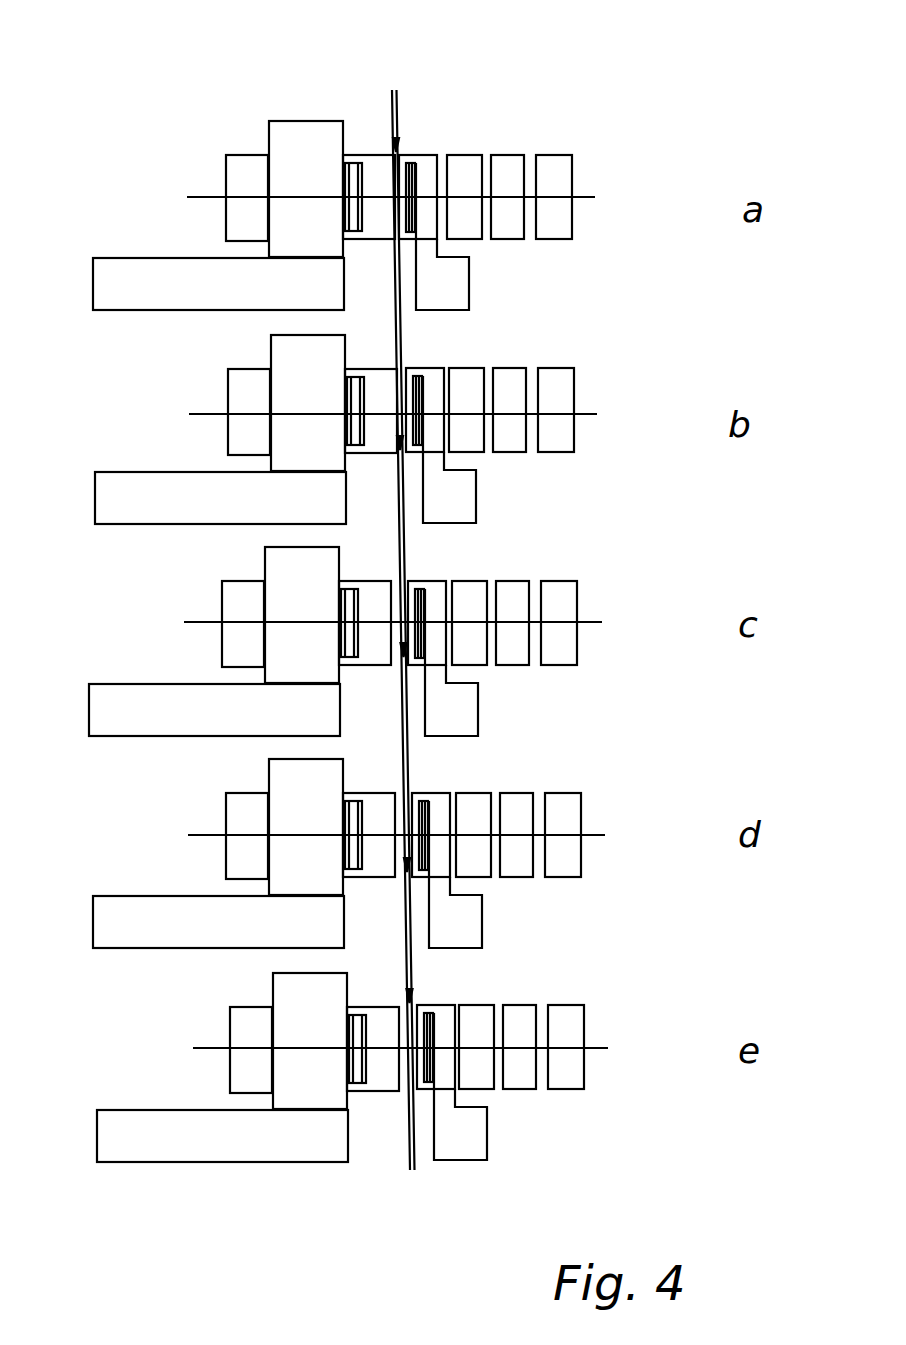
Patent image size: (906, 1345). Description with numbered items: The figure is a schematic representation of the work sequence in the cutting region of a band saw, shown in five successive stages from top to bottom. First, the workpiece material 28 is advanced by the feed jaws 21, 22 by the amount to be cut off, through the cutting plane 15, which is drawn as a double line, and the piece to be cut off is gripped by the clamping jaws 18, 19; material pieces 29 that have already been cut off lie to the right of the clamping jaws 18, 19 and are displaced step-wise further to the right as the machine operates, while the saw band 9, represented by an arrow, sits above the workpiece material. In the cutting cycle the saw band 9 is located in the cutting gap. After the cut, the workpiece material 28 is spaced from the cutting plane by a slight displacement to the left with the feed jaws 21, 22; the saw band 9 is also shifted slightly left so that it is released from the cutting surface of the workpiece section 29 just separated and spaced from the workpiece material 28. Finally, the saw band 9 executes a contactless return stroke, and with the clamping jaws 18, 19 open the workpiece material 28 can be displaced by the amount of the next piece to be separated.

The saw band 9 is at (398, 120).
The cutting plane 15 is at (396, 92).
The clamping jaw 18 is at (505, 591).
The clamping jaw 19 is at (435, 1030).
The feed jaw 21 is at (202, 565).
The feed jaw 22 is at (307, 1080).
The workpiece material 28 is at (252, 1030).
The material piece 29 is at (550, 172).